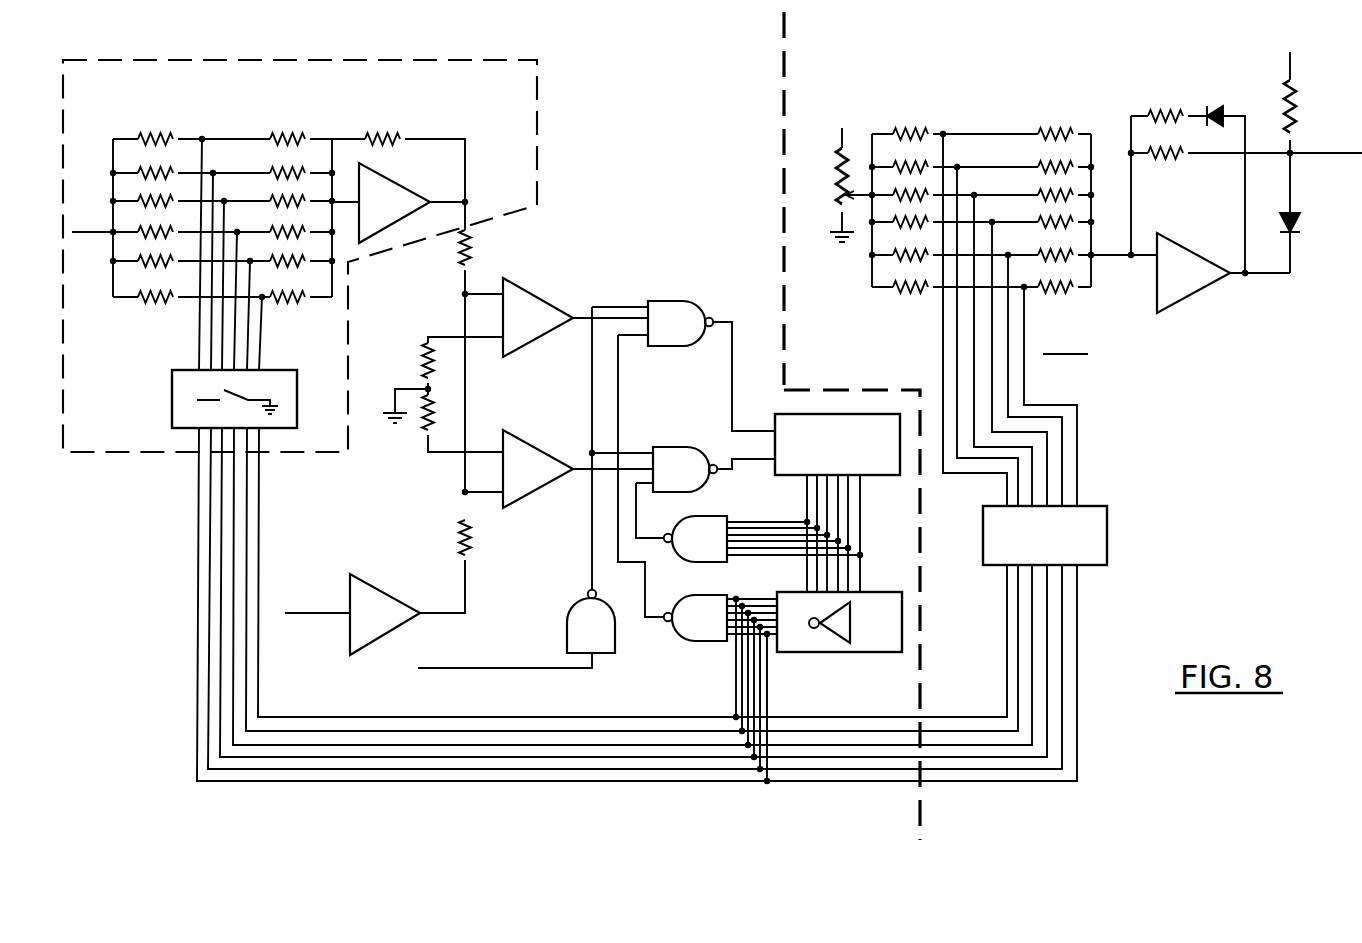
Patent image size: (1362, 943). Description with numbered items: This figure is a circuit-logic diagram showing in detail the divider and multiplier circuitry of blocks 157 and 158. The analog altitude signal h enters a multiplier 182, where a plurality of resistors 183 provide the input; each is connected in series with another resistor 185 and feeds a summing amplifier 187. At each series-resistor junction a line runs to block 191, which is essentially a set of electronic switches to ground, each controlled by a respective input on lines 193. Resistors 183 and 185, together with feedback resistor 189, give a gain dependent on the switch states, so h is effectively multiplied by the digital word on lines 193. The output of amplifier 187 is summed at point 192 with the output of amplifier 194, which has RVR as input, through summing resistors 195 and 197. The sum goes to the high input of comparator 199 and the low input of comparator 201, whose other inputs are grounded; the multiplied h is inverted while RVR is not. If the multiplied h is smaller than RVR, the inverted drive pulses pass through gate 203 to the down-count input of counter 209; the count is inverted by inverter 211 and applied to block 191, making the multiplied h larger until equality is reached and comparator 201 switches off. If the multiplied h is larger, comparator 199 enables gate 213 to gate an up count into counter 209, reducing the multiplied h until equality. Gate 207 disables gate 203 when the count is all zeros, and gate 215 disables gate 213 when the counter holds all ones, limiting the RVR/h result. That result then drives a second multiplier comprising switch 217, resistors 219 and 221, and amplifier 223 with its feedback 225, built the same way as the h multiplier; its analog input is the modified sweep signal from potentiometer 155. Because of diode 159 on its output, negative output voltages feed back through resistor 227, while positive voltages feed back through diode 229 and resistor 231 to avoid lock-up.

The potentiometer 155 is at (842, 150).
The block 157 is at (1030, 59).
The block 158 is at (670, 70).
The diode 159 is at (1300, 221).
The multiplier 182 is at (537, 152).
The resistors 183 is at (160, 173).
The resistor 185 is at (278, 139).
The summing amplifier 187 is at (390, 186).
The feedback resistor 189 is at (380, 139).
The block 191 is at (185, 371).
The summing point 192 is at (466, 395).
The lines 193 is at (198, 573).
The amplifier 194 is at (382, 586).
The summing resistor 195 is at (470, 255).
The summing resistor 197 is at (470, 538).
The comparator 199 is at (525, 296).
The comparator 201 is at (520, 446).
The gate 203 is at (668, 448).
The gate 207 is at (716, 516).
The counter 209 is at (833, 414).
The inverter 211 is at (905, 571).
The gate 213 is at (672, 300).
The gate 215 is at (716, 595).
The switch 217 is at (1107, 530).
The resistors 219 is at (912, 134).
The resistors 221 is at (1045, 134).
The amplifier 223 is at (1214, 232).
The feedback 225 is at (1164, 100).
The resistor 227 is at (1186, 158).
The diode 229 is at (1205, 110).
The resistor 231 is at (1186, 120).